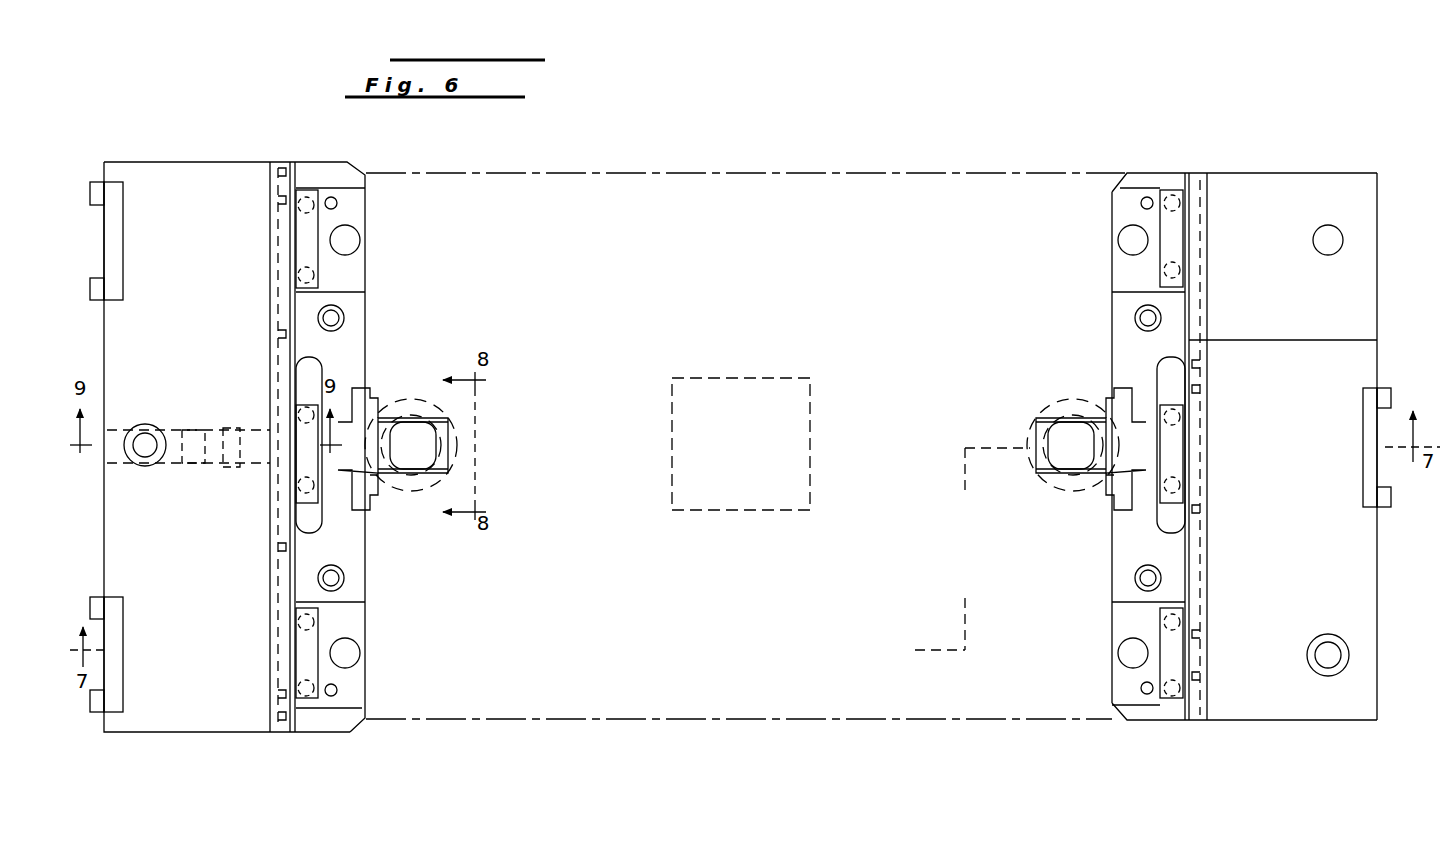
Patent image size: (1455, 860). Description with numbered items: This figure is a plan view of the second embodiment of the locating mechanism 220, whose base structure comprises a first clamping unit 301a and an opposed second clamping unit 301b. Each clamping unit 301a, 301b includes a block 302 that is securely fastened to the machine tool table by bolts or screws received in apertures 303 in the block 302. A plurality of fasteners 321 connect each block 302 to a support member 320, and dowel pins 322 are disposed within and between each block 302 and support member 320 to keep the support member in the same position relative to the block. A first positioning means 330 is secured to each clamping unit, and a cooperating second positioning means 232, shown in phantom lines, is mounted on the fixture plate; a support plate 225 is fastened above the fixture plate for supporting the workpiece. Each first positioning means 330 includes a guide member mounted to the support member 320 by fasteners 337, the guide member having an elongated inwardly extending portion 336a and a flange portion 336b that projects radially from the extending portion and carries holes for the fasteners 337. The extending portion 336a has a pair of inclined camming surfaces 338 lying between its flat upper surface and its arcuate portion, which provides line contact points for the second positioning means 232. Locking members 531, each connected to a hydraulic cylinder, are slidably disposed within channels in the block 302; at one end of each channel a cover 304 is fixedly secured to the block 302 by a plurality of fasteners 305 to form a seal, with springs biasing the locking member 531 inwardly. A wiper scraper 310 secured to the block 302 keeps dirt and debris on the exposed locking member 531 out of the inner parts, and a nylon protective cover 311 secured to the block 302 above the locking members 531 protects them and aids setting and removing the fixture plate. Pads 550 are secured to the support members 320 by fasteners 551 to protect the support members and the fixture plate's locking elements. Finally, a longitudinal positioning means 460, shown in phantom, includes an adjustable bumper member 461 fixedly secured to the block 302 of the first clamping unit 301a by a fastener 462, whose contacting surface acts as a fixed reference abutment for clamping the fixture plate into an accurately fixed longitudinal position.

The locating mechanism second embodiment 220 is at (762, 95).
The support plate 225 is at (1003, 180).
The second positioning means 232 is at (396, 398).
The first clamping unit 301a is at (203, 130).
The second clamping unit 301b is at (1300, 120).
The block 302 is at (145, 708).
The apertures 303 is at (346, 240).
The cover 304 is at (117, 213).
The fasteners 305 is at (94, 182).
The wiper scraper 310 is at (275, 243).
The nylon protective cover 311 is at (284, 508).
The support member 320 is at (353, 580).
The fasteners 321 is at (332, 318).
The dowel pins 322 is at (333, 203).
The first positioning means 330 is at (458, 431).
The inwardly extending portion 336a is at (442, 462).
The flange portion 336b is at (352, 412).
The fasteners 337 is at (380, 488).
The inclined camming surfaces 338 is at (1040, 425).
The longitudinal positioning means 460 is at (137, 420).
The bumper member 461 is at (280, 413).
The fastener 462 is at (240, 448).
The locking member 531 is at (272, 210).
The pads 550 is at (312, 280).
The fasteners 551 is at (1180, 205).